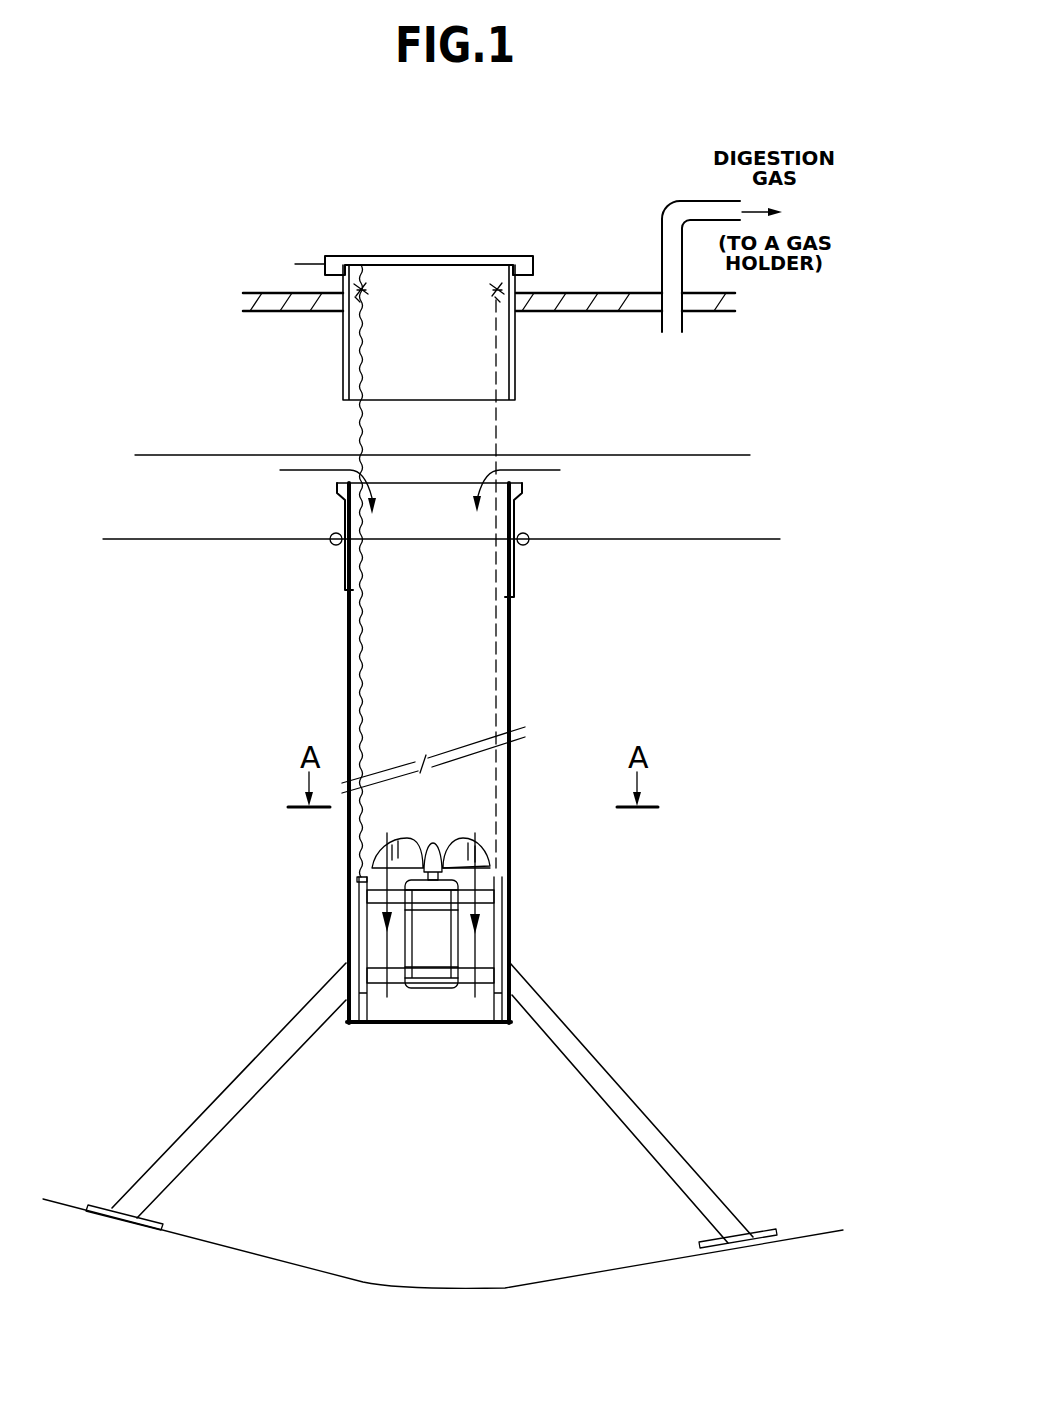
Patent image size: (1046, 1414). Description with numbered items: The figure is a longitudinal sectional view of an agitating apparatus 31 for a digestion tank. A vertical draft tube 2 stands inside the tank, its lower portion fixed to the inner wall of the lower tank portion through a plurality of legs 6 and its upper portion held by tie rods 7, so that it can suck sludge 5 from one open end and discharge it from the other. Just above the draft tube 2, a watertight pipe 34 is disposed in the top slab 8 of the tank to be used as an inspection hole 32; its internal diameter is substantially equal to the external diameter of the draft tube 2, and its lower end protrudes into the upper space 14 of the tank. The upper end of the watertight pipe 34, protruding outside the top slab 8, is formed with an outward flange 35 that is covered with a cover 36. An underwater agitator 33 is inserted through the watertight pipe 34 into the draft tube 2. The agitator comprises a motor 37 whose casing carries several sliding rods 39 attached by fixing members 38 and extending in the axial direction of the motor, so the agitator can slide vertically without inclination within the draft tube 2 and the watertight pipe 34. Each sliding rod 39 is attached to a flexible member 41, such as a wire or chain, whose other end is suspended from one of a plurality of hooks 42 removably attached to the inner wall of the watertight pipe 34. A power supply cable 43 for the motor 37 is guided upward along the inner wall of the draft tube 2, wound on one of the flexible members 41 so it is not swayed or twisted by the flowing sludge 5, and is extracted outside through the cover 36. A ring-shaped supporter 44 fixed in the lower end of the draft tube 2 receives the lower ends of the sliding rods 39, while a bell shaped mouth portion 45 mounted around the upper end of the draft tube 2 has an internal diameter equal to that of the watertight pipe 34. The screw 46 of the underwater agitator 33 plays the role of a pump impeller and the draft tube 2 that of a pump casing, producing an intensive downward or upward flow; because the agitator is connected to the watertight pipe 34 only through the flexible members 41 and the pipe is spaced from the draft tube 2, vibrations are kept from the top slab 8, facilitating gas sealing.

The draft tube 2 is at (349, 678).
The sludge 5 is at (180, 455).
The legs 6 is at (180, 1137).
The tie rods 7 is at (742, 539).
The top slab 8 is at (597, 293).
The upper space 14 is at (273, 377).
The agitating apparatus 31 is at (540, 691).
The inspection hole 32 is at (405, 243).
The underwater agitator 33 is at (438, 826).
The watertight pipe 34 is at (518, 363).
The outward flange 35 is at (540, 282).
The cover 36 is at (455, 256).
The motor 37 is at (407, 944).
The fixing members 38 is at (372, 890).
The sliding rods 39 is at (368, 917).
The flexible members 41 is at (499, 430).
The hooks 42 is at (497, 288).
The power supply cable 43 is at (298, 264).
The ring-shaped supporter 44 is at (488, 1022).
The bell shaped mouth portion 45 is at (516, 513).
The screw 46 is at (482, 843).